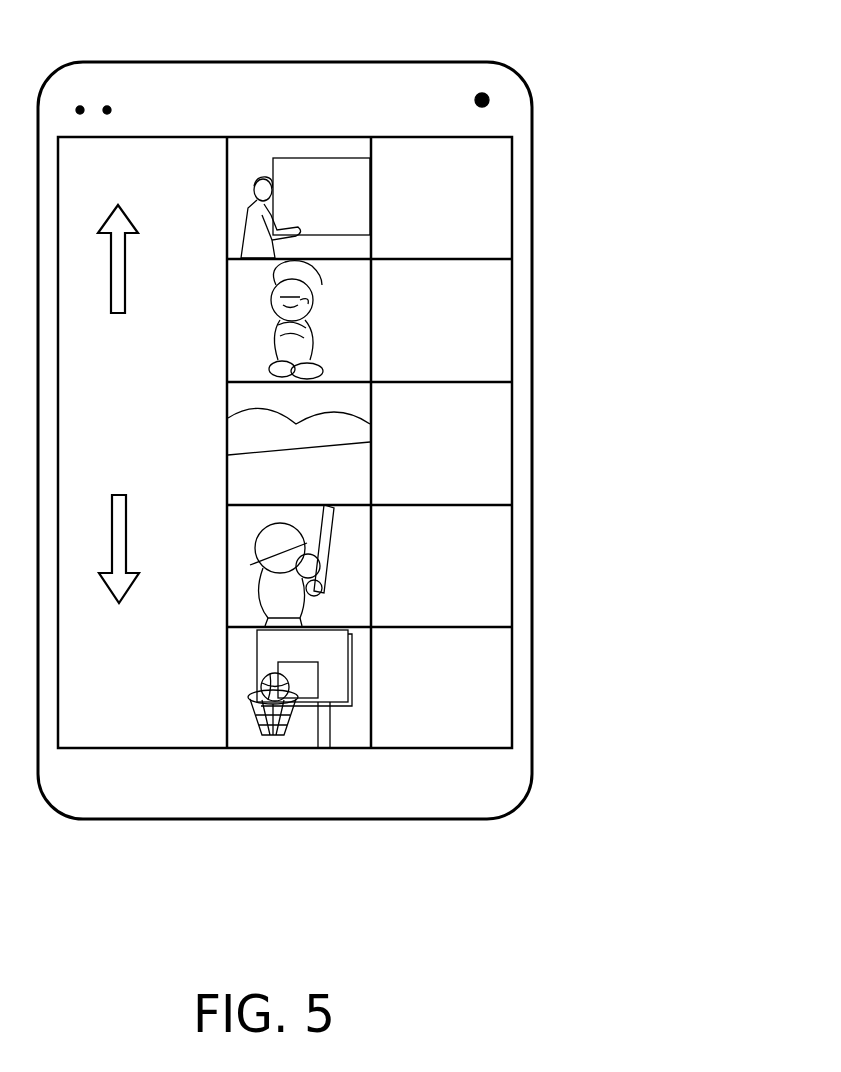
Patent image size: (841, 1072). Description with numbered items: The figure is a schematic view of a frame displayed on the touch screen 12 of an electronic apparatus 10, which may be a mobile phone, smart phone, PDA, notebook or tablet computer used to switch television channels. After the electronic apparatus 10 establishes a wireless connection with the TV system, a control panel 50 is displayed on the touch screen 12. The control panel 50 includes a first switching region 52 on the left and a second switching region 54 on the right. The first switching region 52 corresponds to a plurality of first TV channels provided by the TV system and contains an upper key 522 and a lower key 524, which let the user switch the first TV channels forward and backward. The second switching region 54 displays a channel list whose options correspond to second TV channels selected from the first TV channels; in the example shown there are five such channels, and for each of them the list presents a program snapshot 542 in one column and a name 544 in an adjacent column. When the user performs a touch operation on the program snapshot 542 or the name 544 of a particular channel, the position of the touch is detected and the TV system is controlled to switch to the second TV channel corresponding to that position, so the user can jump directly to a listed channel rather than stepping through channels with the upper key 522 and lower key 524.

The electronic apparatus 10 is at (428, 62).
The touch screen 12 is at (194, 137).
The control panel 50 is at (305, 532).
The first switching region 52 is at (162, 507).
The upper key 522 is at (127, 217).
The lower key 524 is at (118, 494).
The second switching region 54 is at (370, 506).
The program snapshots 542 is at (368, 760).
The names 544 is at (443, 488).